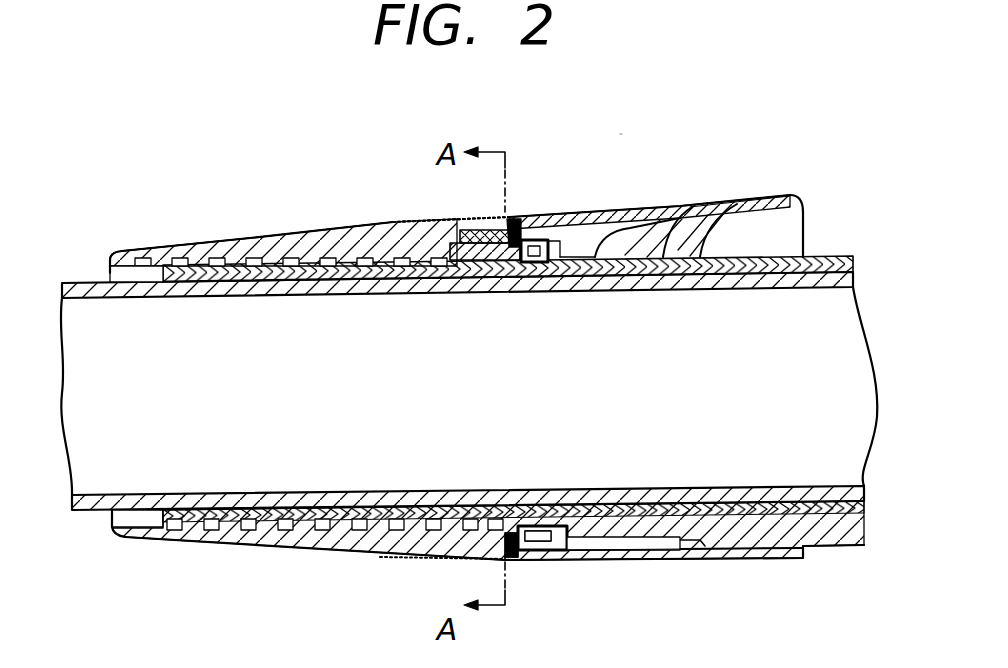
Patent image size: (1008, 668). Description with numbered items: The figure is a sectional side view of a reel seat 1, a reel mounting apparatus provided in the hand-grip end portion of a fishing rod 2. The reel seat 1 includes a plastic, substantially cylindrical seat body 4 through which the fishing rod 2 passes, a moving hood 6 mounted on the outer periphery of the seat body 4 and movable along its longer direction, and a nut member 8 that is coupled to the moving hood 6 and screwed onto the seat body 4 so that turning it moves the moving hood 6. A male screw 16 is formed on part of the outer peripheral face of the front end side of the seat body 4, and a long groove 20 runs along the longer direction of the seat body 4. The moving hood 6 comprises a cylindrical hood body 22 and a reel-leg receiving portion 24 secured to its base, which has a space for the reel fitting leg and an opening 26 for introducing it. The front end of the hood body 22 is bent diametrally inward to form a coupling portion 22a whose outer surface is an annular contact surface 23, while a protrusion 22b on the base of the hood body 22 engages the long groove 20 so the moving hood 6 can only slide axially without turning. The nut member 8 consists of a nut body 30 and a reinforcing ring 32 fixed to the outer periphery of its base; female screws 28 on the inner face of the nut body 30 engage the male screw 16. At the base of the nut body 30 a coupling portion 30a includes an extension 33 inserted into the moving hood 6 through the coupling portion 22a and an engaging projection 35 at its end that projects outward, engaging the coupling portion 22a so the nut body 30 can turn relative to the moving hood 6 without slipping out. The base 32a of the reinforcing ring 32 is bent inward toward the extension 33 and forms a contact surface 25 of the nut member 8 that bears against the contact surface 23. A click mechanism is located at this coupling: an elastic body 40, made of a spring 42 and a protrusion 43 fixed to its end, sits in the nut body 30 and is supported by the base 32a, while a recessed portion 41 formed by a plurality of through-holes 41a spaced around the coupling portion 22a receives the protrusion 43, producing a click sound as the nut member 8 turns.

The reel seat 1 is at (625, 128).
The fishing rod 2 is at (780, 493).
The seat body 4 is at (784, 556).
The moving hood 6 is at (718, 192).
The nut member 8 is at (278, 230).
The male screw 16 is at (227, 507).
The long groove 20 is at (627, 535).
The hood body 22 is at (636, 208).
The coupling portion 22a is at (515, 224).
The protrusion 22b is at (722, 551).
The contact surface 23 is at (505, 561).
The reel-leg receiving portion 24 is at (684, 209).
The contact surface 25 is at (516, 522).
The opening 26 is at (807, 233).
The female screws 28 is at (213, 243).
The nut body 30 is at (322, 240).
The coupling portion 30a is at (567, 309).
The reinforcing ring 32 is at (405, 224).
The base of the reinforcing ring 32a is at (538, 536).
The extension 33 is at (526, 264).
The engaging projection 35 is at (581, 289).
The elastic body 40 is at (444, 304).
The recessed portion 41 is at (511, 545).
The through-holes 41a is at (537, 219).
The spring 42 is at (470, 246).
The protrusion 43 is at (478, 290).